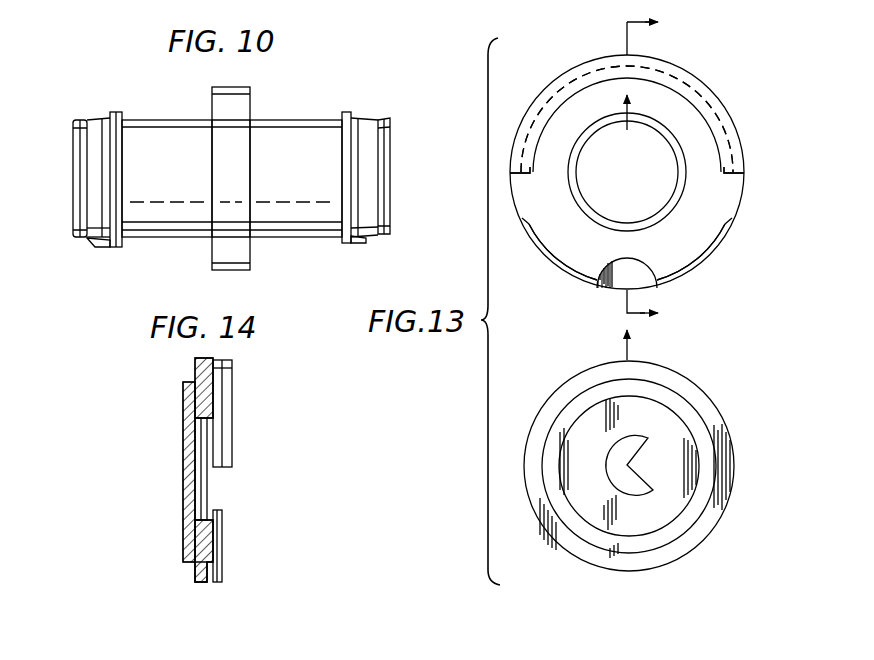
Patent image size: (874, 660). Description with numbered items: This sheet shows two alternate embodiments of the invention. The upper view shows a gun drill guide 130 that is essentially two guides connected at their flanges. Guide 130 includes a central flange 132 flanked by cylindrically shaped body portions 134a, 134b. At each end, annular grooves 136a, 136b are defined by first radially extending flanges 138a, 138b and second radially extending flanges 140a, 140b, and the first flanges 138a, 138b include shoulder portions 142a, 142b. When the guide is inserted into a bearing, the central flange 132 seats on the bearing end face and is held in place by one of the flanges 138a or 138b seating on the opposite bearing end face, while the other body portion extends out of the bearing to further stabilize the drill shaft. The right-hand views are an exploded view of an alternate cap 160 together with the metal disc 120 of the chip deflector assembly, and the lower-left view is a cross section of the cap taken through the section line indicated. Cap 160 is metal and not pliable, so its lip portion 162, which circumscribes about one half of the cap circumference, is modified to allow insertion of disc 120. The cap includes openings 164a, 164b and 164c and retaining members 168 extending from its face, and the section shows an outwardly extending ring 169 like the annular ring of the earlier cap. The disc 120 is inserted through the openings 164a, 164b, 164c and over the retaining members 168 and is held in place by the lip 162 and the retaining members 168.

In FIG. 10, the gun drill guide 130 is at (318, 60).
In FIG. 10, the central flange 132 is at (246, 122).
In FIG. 10, the body portion 134a is at (162, 168).
In FIG. 10, the body portion 134b is at (296, 168).
In FIG. 10, the annular groove 136a is at (96, 243).
In FIG. 10, the annular groove 136b is at (364, 100).
In FIG. 10, the first radially extending flange 138a is at (118, 118).
In FIG. 10, the first radially extending flange 138b is at (355, 250).
In FIG. 10, the second radially extending flange 140a is at (78, 122).
In FIG. 10, the second radially extending flange 140b is at (390, 124).
In FIG. 10, the shoulder portion 142a is at (108, 245).
In FIG. 10, the shoulder portion 142b is at (360, 238).
In FIG. 13, the cap 160 is at (778, 133).
In FIG. 14, the lip portion 162 is at (225, 425).
In FIG. 13, the lip portion 162 is at (705, 110).
In FIG. 13, the opening 164a is at (526, 210).
In FIG. 14, the opening 164b is at (214, 578).
In FIG. 13, the opening 164b is at (612, 292).
In FIG. 13, the opening 164c is at (746, 205).
In FIG. 14, the retaining member 168 is at (222, 535).
In FIG. 13, the retaining member 168 is at (708, 250).
In FIG. 14, the outwardly extending ring 169 is at (183, 392).
In FIG. 13, the metal disc 120 is at (702, 407).